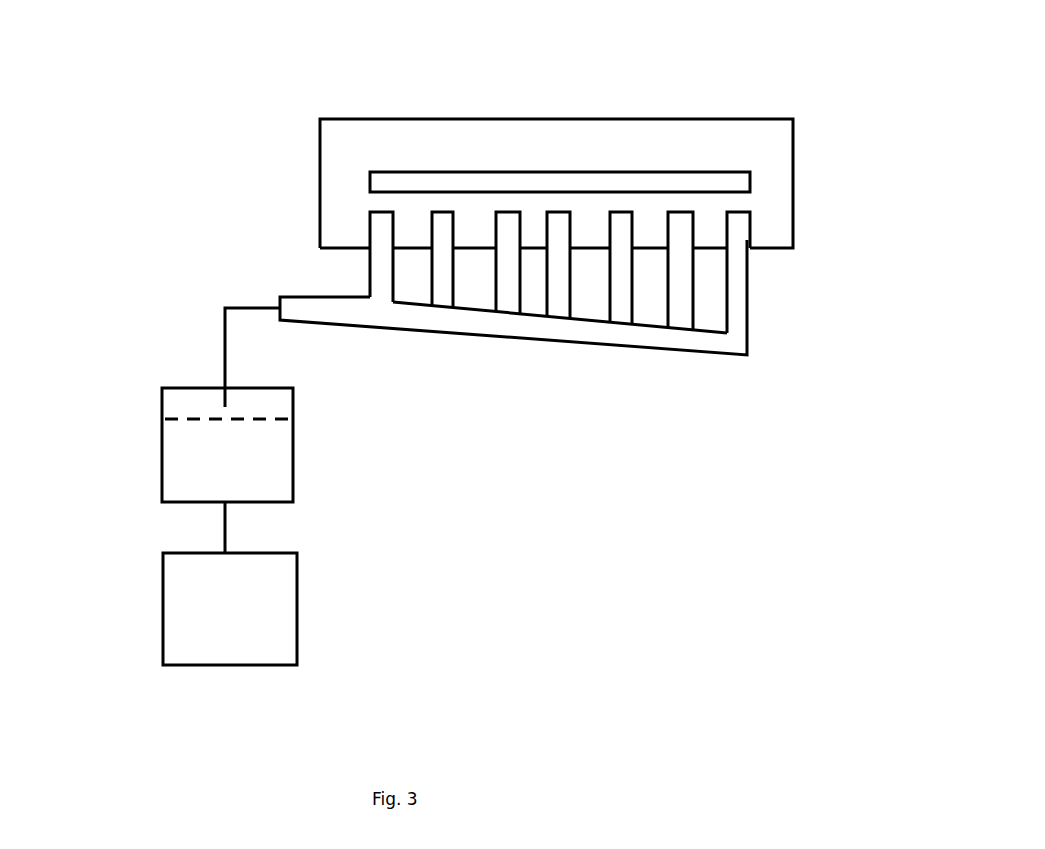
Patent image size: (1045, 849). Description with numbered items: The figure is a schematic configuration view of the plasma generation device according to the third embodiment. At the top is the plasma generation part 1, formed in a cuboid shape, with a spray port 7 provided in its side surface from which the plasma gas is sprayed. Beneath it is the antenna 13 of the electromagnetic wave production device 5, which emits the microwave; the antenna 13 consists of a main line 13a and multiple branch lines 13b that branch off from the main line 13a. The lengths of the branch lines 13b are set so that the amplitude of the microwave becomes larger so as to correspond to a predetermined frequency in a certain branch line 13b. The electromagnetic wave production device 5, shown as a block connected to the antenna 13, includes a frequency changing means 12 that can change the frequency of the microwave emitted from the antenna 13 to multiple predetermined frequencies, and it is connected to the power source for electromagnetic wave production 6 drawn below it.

The plasma generation part 1 is at (793, 152).
The spray port 7 is at (678, 172).
The antenna 13 is at (603, 357).
The main line 13a is at (573, 342).
The branch lines 13b is at (636, 272).
The frequency changing means 12 is at (162, 402).
The electromagnetic wave production device 5 is at (294, 466).
The power source for electromagnetic wave production 6 is at (297, 608).